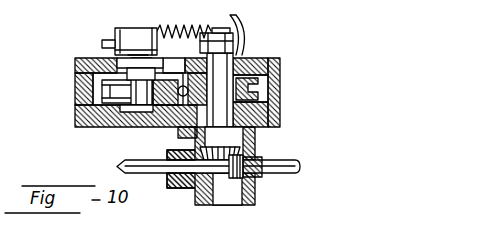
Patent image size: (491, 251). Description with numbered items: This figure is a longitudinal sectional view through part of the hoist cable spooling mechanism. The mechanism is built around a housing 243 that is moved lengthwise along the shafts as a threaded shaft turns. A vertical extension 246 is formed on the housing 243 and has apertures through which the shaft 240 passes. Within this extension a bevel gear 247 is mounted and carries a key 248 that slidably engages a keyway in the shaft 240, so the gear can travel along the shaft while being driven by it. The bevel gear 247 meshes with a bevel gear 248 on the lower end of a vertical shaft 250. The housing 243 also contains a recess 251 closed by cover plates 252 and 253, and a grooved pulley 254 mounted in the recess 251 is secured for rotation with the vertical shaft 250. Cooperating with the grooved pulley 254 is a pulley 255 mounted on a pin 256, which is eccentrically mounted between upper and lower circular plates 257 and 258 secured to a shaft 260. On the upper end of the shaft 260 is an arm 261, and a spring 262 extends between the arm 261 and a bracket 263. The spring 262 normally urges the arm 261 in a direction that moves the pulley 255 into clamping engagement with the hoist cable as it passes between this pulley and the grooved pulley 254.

The shaft 240 is at (303, 172).
The housing 243 is at (280, 125).
The vertical extension 246 is at (245, 182).
The bevel gear 247 is at (240, 182).
The key 248 is at (263, 173).
The vertical shaft 250 is at (280, 72).
The recess 251 is at (282, 88).
The cover plate 252 is at (252, 58).
The cover plate 253 is at (76, 60).
The grooved pulley 254 is at (277, 95).
The pulley 255 is at (110, 97).
The pin 256 is at (145, 127).
The upper circular plate 257 is at (110, 83).
The lower circular plate 258 is at (122, 126).
The shaft 260 is at (132, 60).
The arm 261 is at (112, 33).
The spring 262 is at (172, 23).
The bracket 263 is at (240, 34).